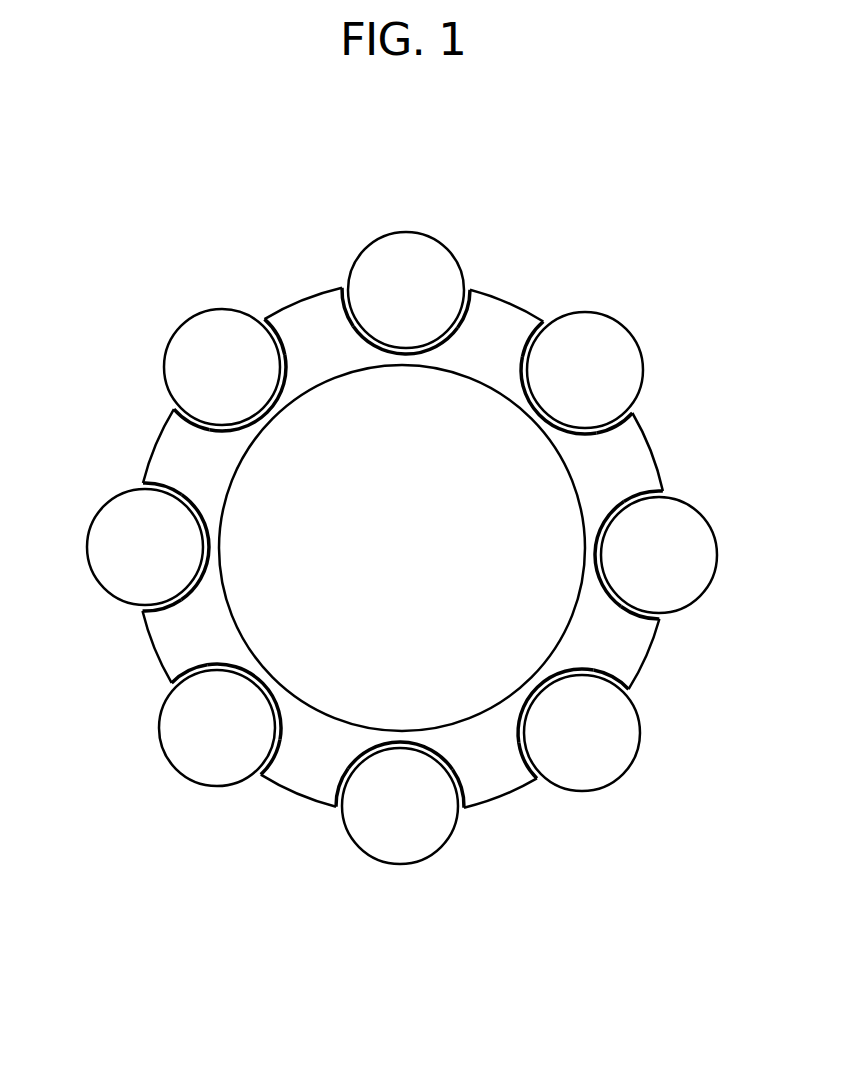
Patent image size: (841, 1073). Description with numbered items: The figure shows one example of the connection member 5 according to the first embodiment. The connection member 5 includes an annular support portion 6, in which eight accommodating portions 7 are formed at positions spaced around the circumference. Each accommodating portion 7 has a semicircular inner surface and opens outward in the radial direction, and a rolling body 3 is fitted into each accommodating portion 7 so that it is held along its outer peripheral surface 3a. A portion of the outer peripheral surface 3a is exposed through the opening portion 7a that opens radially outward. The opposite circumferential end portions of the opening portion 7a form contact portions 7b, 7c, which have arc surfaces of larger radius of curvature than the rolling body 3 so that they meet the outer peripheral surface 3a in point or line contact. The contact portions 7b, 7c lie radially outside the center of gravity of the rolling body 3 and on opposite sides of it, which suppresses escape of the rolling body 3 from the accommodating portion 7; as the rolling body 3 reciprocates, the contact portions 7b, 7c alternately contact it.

The rolling body 3 is at (403, 549).
The outer peripheral surface 3a is at (437, 238).
The connection member 5 is at (527, 216).
The support portion 6 is at (490, 318).
The accommodating portion 7 is at (396, 544).
The opening portion 7a is at (349, 278).
The contact portion 7b is at (467, 290).
The contact portion 7c is at (352, 324).